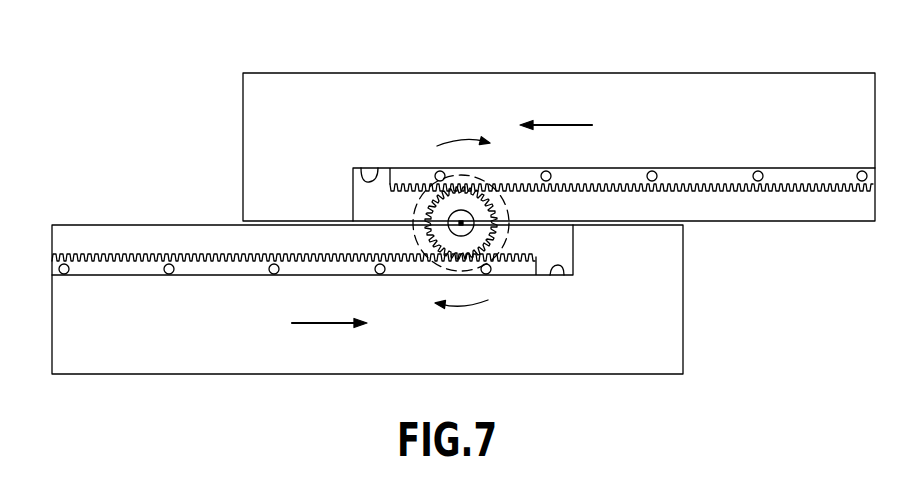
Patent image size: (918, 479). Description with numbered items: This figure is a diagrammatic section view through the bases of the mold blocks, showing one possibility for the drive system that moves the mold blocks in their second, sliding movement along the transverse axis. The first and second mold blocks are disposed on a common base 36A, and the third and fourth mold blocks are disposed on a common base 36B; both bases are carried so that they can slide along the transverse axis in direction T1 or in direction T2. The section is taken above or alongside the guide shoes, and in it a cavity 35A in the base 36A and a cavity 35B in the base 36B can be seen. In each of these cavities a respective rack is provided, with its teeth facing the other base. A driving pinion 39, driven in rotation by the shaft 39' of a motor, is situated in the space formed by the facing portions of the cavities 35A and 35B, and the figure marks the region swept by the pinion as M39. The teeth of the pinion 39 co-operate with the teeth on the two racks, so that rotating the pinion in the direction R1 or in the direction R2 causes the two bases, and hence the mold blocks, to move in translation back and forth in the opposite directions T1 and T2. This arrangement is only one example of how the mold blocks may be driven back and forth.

The common base 36A is at (750, 94).
The common base 36B is at (627, 356).
The cavity 35A is at (361, 168).
The cavity 35B is at (564, 275).
The driving pinion 39 is at (446, 250).
The shaft 39' is at (495, 187).
The pinion gear motion envelope M39 is at (412, 205).
The direction T1 is at (556, 113).
The direction T2 is at (329, 312).
The direction R1 is at (463, 131).
The direction R2 is at (461, 318).